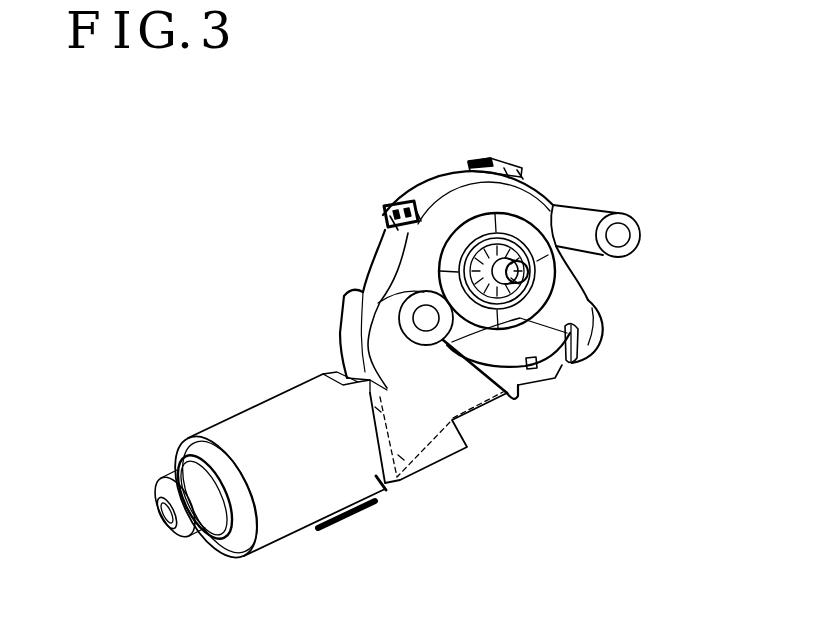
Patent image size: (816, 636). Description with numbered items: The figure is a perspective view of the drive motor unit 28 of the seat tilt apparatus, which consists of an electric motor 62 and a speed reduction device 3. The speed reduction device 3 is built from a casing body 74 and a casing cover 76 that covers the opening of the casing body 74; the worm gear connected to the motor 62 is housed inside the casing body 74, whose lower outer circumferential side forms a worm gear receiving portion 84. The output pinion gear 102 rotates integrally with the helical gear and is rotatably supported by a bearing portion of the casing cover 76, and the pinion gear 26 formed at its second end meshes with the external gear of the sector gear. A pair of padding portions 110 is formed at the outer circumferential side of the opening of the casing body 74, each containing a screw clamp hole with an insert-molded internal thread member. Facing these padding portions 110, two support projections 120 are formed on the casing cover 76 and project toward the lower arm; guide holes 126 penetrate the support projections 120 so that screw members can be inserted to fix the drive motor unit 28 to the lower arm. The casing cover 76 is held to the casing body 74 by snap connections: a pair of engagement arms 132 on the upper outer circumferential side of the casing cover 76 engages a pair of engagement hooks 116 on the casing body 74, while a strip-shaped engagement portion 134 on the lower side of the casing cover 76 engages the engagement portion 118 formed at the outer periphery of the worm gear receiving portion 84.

The speed reduction device 3 is at (545, 187).
The pinion gear 26 is at (582, 338).
The drive motor unit 28 is at (245, 186).
The electric motor 62 is at (265, 413).
The casing body 74 is at (380, 236).
The casing cover 76 is at (448, 190).
The worm gear receiving portion 84 is at (495, 392).
The output pinion gear 102 is at (528, 281).
The padding portion 110 is at (344, 288).
The engagement hook 116 is at (385, 209).
The engagement portion 118 is at (545, 388).
The support projection 120 is at (583, 212).
The guide hole 126 is at (620, 234).
The engagement arm 132 is at (392, 202).
The strip-shaped engagement portion 134 is at (566, 368).